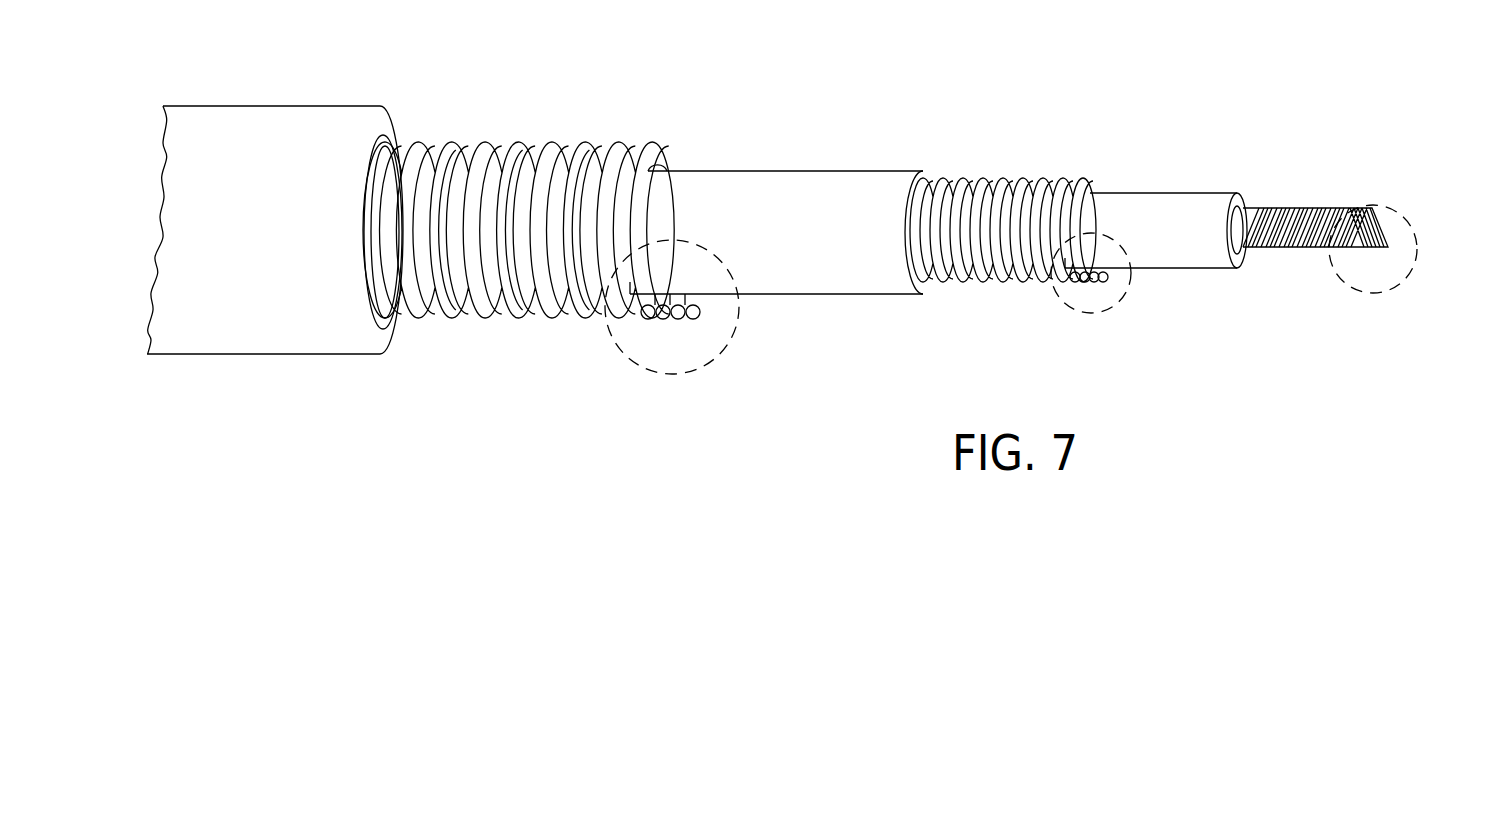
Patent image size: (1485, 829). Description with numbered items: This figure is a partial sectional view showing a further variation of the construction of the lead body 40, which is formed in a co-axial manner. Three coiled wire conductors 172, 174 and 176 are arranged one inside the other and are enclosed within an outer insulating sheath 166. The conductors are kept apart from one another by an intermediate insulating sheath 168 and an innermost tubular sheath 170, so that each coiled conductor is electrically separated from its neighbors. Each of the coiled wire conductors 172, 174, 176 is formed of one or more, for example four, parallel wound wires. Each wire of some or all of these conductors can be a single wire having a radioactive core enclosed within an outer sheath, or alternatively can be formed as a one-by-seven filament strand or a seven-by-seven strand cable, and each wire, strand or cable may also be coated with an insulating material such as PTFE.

The lead body 40 is at (739, 127).
The outer insulating sheath 166 is at (277, 338).
The intermediate insulating sheath 168 is at (808, 197).
The innermost tubular sheath 170 is at (1146, 209).
The coiled wire conductor 172 is at (700, 368).
The coiled wire conductor 174 is at (1098, 313).
The coiled wire conductor 176 is at (1385, 293).